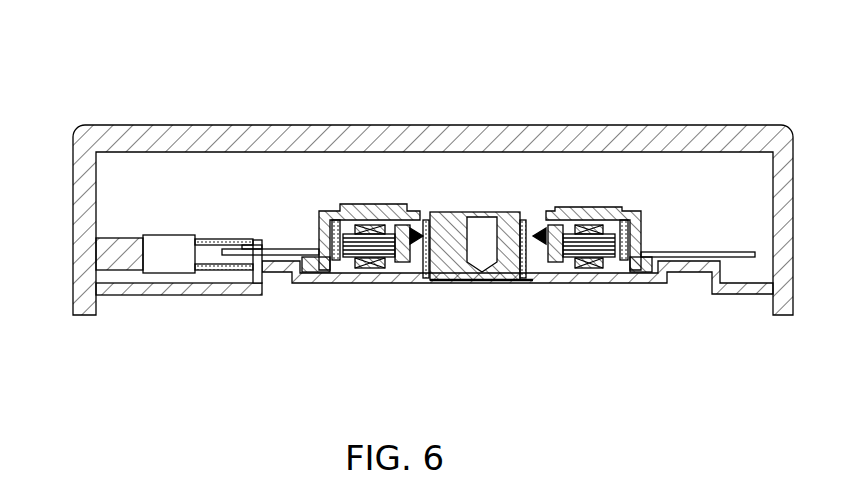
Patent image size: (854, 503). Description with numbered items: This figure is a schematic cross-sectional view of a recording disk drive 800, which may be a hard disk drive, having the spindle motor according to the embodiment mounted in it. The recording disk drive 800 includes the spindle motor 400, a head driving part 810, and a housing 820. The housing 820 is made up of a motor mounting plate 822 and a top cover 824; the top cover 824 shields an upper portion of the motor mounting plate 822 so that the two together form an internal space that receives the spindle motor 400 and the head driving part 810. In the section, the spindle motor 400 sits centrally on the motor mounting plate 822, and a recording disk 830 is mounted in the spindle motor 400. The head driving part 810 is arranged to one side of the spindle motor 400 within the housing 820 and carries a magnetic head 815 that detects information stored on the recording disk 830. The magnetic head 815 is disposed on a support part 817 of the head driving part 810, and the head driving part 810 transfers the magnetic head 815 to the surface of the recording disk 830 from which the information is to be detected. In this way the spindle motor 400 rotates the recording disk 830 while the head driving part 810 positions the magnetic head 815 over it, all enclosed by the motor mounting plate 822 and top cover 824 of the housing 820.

The recording disk drive 800 is at (451, 43).
The housing 820 is at (64, 288).
The motor mounting plate 822 is at (787, 299).
The top cover 824 is at (323, 139).
The spindle motor 400 is at (527, 200).
The head driving part 810 is at (170, 273).
The support part 817 is at (222, 271).
The magnetic head 815 is at (272, 273).
The recording disk 830 is at (742, 258).